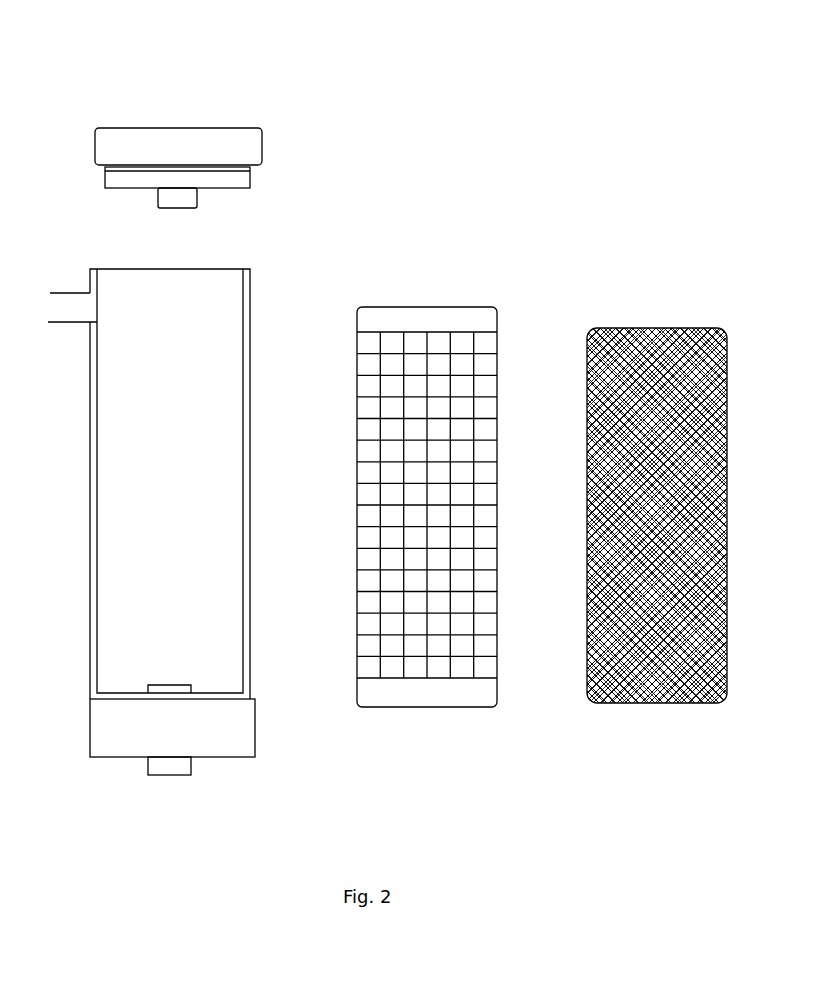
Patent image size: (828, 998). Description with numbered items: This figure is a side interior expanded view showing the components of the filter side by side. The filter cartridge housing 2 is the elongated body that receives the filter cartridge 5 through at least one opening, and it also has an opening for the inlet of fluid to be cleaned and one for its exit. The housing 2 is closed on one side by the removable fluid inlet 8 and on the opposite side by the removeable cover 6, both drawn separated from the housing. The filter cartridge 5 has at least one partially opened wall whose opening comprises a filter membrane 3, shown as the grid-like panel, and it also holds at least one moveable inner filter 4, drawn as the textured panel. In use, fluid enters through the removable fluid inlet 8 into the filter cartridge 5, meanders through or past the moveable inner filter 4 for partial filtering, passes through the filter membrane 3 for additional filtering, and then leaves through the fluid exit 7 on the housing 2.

The filter cartridge housing 2 is at (252, 336).
The filter membrane 3 is at (480, 645).
The moveable inner filter 4 is at (643, 330).
The filter cartridge 5 is at (449, 457).
The removeable cover 6 is at (208, 132).
The fluid exit 7 is at (50, 326).
The removable fluid inlet 8 is at (122, 740).